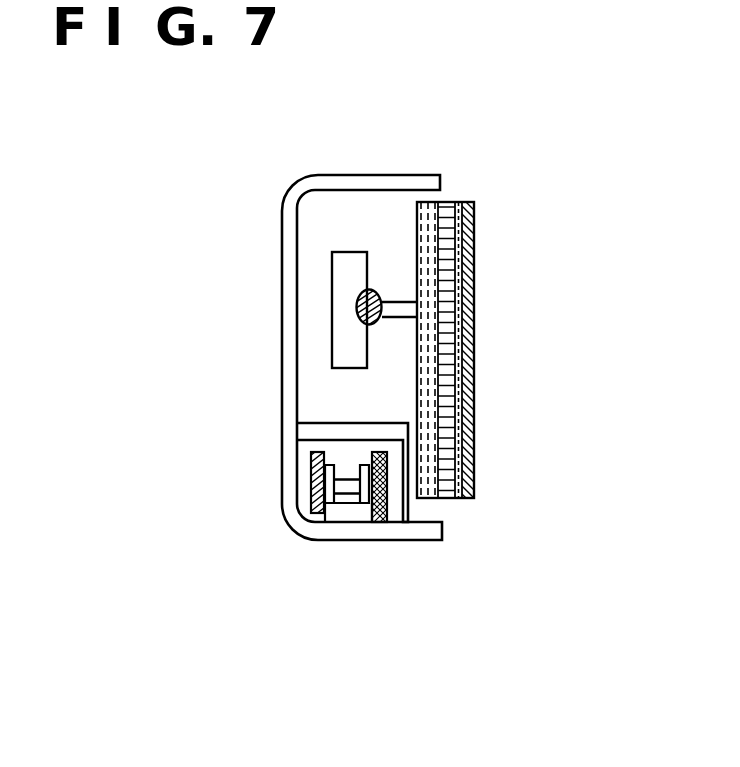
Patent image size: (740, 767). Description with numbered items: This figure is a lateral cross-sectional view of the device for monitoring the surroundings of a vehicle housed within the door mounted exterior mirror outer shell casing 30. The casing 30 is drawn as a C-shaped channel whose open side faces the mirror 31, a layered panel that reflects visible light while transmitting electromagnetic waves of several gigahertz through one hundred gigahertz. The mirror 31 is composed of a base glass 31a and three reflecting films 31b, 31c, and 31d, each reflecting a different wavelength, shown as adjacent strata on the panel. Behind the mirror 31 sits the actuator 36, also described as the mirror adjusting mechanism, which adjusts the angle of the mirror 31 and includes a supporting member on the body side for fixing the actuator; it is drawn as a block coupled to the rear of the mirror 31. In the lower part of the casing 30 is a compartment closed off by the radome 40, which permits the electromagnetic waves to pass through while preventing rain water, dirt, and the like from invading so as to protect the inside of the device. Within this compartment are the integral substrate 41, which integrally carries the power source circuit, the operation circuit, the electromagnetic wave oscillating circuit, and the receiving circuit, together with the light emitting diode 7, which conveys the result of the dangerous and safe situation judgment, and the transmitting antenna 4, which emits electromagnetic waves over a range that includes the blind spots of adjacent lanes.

The door mounted exterior mirror outer shell casing 30 is at (316, 175).
The mirror 31 is at (437, 309).
The base glass 31a is at (437, 201).
The reflecting film 31b is at (443, 201).
The reflecting film 31c is at (455, 202).
The reflecting film 31d is at (474, 255).
The actuator 36 is at (333, 287).
The radome 40 is at (408, 508).
The integral substrate 41 is at (312, 483).
The light emitting diode 7 is at (348, 513).
The transmitting antenna 4 is at (380, 514).